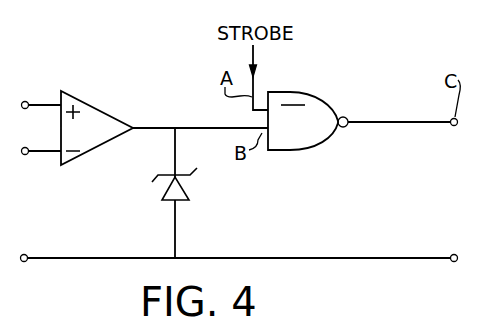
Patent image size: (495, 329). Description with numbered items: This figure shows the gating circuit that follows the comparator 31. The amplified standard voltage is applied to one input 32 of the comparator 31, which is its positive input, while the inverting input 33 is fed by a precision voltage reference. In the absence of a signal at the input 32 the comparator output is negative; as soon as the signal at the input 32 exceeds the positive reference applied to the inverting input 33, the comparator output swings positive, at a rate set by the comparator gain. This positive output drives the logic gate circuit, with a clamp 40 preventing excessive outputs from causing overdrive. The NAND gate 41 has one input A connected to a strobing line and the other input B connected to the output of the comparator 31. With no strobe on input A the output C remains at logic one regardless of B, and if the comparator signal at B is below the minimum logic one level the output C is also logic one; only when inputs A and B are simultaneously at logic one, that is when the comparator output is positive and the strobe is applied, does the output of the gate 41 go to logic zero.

The comparator 31 is at (97, 126).
The input 32 is at (45, 104).
The inverting input 33 is at (48, 152).
The clamp 40 is at (186, 192).
The NAND gate 41 is at (311, 134).